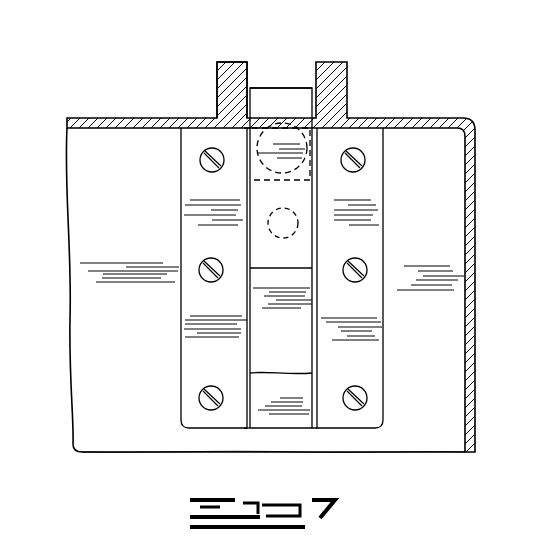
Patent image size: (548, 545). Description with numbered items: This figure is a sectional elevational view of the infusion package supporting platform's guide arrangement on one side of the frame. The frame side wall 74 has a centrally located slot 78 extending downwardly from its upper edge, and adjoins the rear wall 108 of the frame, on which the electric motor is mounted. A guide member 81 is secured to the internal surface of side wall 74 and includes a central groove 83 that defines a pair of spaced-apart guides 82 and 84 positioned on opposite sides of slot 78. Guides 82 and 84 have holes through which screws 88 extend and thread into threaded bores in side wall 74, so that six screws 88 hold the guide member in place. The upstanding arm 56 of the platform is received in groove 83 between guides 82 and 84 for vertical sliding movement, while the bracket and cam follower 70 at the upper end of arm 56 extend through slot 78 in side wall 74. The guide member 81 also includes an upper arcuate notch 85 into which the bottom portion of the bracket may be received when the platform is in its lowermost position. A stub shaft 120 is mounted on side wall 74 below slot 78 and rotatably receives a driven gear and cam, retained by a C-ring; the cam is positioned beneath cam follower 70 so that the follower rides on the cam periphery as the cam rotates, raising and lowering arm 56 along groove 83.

The upstanding arm 56 is at (281, 258).
The cam follower 70 is at (295, 104).
The side wall 74 is at (265, 290).
The slot 78 is at (281, 70).
The guide member 81 is at (238, 410).
The guide 82 is at (190, 232).
The central groove 83 is at (272, 423).
The guide 84 is at (382, 237).
The upper arcuate notch 85 is at (262, 128).
The screw 88 is at (200, 166).
The rear wall 108 is at (476, 262).
The stub shaft 120 is at (298, 234).